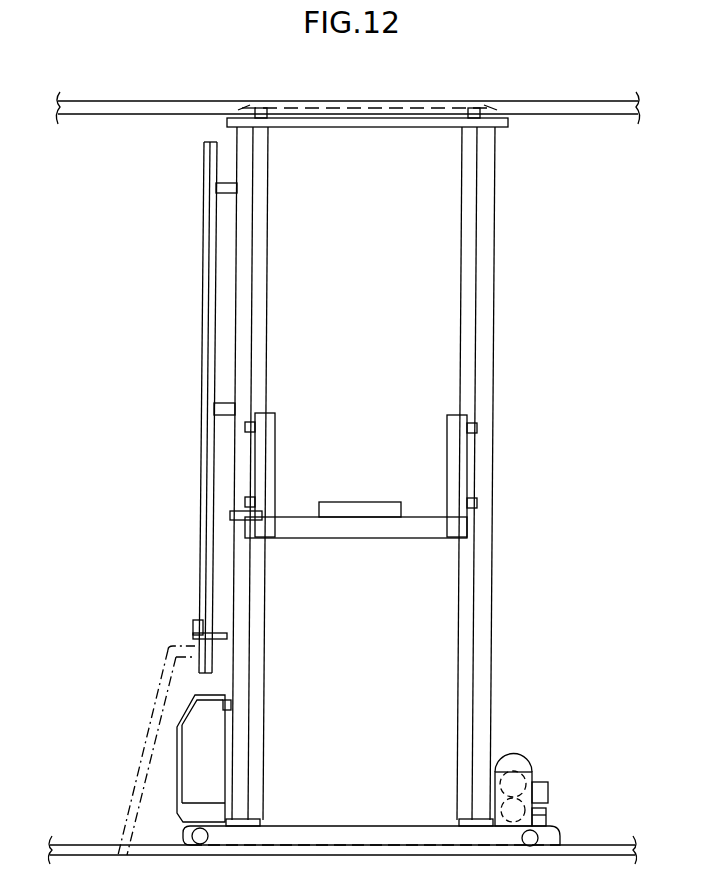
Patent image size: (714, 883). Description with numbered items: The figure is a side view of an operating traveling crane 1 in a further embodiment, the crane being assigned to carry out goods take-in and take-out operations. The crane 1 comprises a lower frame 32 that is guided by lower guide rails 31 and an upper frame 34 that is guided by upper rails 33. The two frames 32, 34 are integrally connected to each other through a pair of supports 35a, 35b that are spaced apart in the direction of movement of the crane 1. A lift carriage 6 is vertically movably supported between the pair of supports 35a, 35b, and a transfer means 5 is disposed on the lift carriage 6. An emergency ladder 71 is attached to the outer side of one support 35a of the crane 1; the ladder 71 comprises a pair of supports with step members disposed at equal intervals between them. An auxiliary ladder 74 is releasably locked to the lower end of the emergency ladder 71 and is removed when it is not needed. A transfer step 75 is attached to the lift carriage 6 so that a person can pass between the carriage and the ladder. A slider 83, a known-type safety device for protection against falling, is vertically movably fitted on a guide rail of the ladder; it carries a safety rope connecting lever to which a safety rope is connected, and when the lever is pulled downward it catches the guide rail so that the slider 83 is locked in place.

The traveling crane 1 is at (317, 491).
The transfer means 5 is at (357, 508).
The lift carriage 6 is at (361, 526).
The lower guide rails 31 is at (594, 852).
The lower frame 32 is at (345, 828).
The upper rails 33 is at (594, 116).
The upper frame 34 is at (364, 128).
The support 35a is at (244, 290).
The support 35b is at (485, 290).
The emergency ladder 71 is at (199, 312).
The auxiliary ladder 74 is at (147, 738).
The transfer step 75 is at (236, 511).
The slider 83 is at (193, 627).